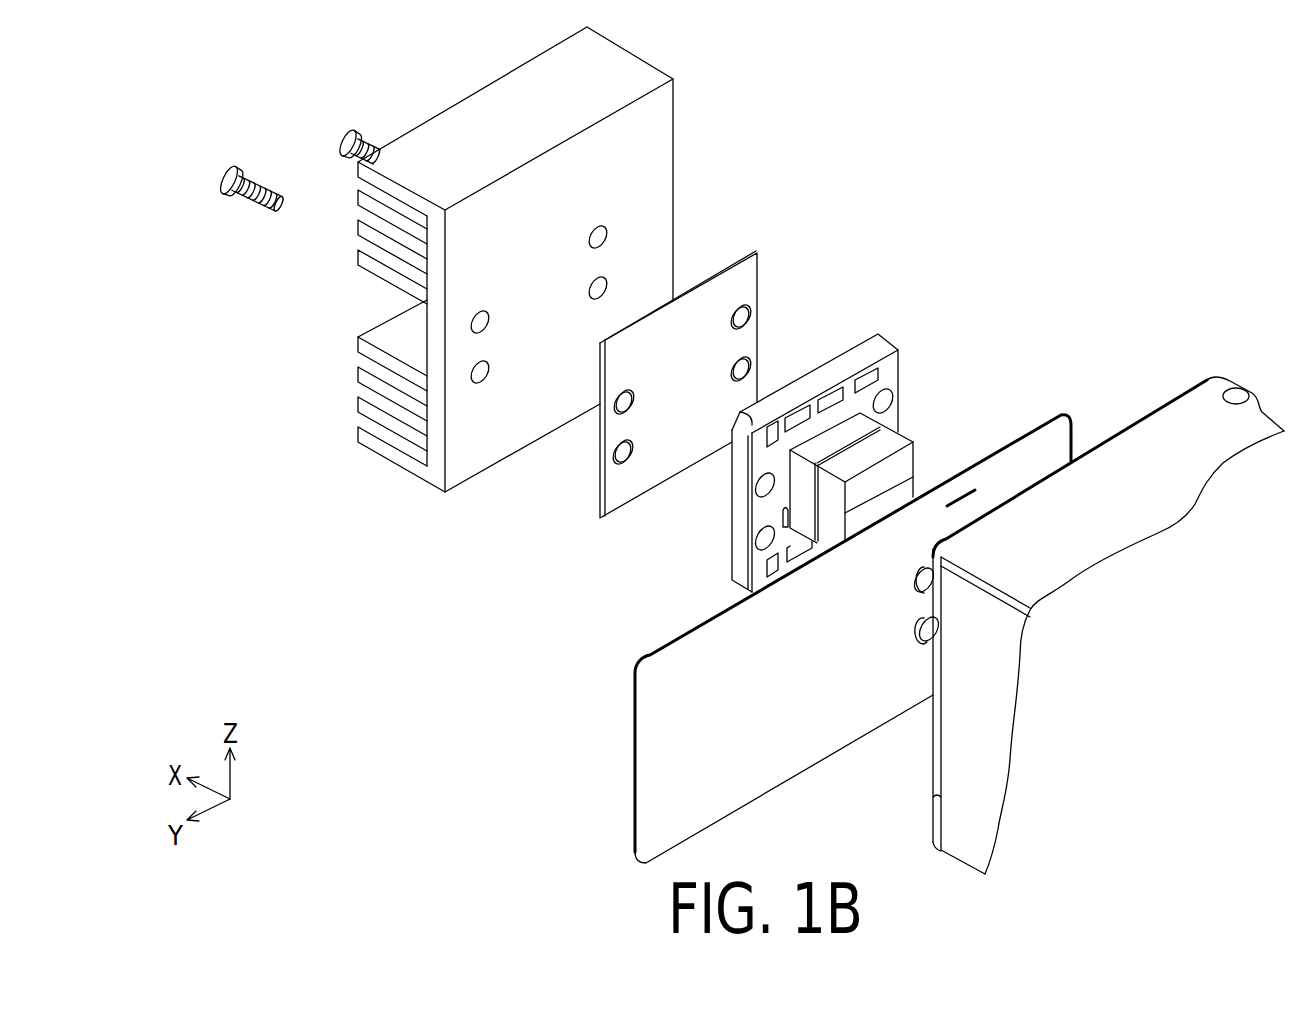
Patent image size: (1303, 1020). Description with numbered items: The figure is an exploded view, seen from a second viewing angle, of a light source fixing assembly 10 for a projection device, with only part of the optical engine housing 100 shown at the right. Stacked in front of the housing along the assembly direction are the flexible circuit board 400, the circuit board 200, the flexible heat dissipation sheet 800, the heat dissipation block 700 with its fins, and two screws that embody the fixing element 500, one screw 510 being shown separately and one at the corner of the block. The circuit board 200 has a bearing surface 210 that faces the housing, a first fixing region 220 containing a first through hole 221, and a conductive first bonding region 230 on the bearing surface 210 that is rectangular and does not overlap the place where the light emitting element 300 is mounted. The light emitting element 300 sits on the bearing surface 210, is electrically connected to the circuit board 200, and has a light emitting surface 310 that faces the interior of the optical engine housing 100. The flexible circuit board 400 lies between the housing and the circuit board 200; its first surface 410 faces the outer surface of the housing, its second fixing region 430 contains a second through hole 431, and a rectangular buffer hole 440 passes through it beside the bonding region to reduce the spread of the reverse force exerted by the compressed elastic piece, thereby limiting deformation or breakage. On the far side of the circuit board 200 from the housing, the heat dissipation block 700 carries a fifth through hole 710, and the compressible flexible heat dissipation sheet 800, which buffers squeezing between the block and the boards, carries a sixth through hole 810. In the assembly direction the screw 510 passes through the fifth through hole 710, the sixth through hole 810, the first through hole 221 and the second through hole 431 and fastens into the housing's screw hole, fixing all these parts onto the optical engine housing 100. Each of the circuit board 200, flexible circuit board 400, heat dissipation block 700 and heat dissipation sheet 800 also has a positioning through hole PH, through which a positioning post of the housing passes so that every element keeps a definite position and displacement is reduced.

The light source fixing assembly 10 is at (148, 61).
The optical engine housing 100 is at (1181, 394).
The circuit board 200 is at (736, 429).
The bearing surface 210 is at (748, 458).
The first fixing region 220 is at (681, 521).
The first through hole 221 is at (755, 497).
The first bonding region 230 is at (859, 369).
The light emitting element 300 is at (890, 435).
The light emitting surface 310 is at (910, 454).
The flexible circuit board 400 is at (913, 601).
The first surface 410 is at (888, 602).
The second fixing region 430 is at (1051, 625).
The second through hole 431 is at (938, 576).
The buffer hole 440 is at (965, 482).
The fixing element 500 is at (291, 159).
The screw 510 is at (256, 175).
The heat dissipation block 700 is at (510, 100).
The fifth through hole 710 is at (474, 339).
The flexible heat dissipation sheet 800 is at (740, 278).
The sixth through hole 810 is at (612, 415).
The positioning through hole PH is at (613, 220).